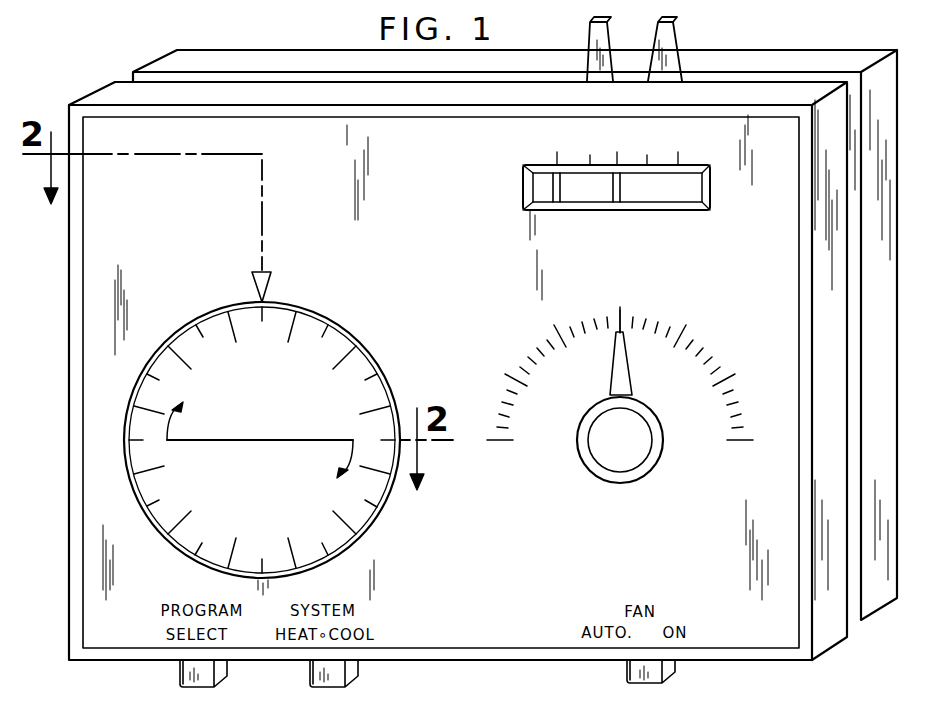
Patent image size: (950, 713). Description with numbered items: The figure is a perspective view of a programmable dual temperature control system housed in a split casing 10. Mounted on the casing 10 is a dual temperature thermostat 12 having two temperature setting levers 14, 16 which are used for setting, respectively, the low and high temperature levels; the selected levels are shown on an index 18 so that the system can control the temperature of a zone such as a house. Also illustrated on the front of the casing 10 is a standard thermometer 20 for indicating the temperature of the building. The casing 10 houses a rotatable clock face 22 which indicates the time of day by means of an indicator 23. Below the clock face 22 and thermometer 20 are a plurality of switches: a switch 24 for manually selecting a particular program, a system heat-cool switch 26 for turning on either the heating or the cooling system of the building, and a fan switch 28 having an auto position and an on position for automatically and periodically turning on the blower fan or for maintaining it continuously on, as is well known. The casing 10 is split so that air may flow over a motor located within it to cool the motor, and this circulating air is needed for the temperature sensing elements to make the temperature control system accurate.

The split casing 10 is at (345, 67).
The dual temperature thermostat 12 is at (512, 185).
The temperature setting lever 14 is at (598, 38).
The temperature setting lever 16 is at (668, 38).
The index 18 is at (530, 167).
The standard thermometer 20 is at (712, 353).
The rotatable clock face 22 is at (333, 334).
The indicator 23 is at (252, 282).
The switch 24 is at (192, 681).
The system heat-cool switch 26 is at (330, 681).
The fan switch 28 is at (645, 677).